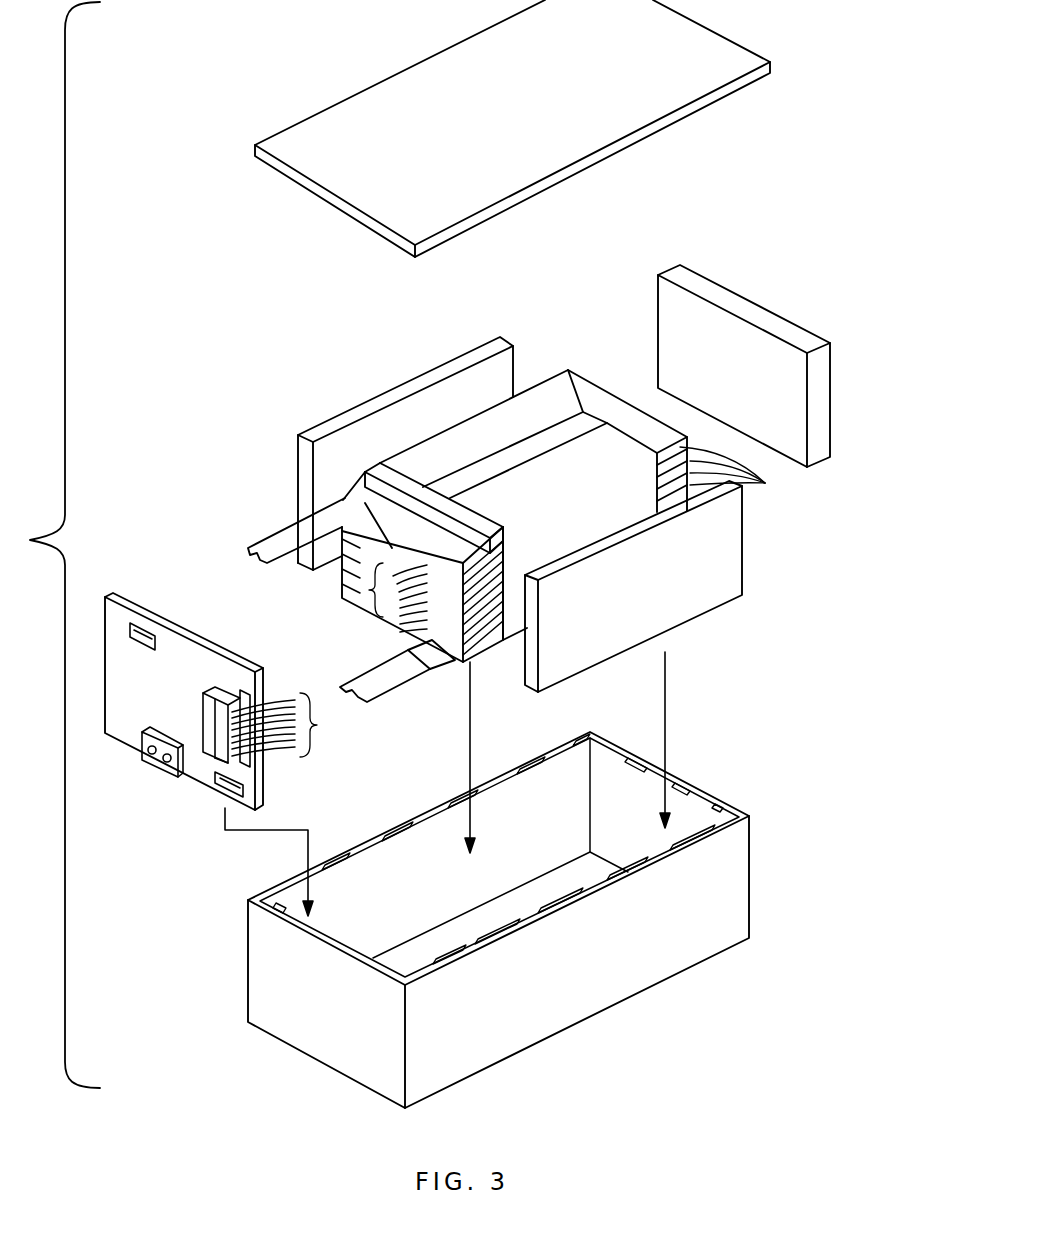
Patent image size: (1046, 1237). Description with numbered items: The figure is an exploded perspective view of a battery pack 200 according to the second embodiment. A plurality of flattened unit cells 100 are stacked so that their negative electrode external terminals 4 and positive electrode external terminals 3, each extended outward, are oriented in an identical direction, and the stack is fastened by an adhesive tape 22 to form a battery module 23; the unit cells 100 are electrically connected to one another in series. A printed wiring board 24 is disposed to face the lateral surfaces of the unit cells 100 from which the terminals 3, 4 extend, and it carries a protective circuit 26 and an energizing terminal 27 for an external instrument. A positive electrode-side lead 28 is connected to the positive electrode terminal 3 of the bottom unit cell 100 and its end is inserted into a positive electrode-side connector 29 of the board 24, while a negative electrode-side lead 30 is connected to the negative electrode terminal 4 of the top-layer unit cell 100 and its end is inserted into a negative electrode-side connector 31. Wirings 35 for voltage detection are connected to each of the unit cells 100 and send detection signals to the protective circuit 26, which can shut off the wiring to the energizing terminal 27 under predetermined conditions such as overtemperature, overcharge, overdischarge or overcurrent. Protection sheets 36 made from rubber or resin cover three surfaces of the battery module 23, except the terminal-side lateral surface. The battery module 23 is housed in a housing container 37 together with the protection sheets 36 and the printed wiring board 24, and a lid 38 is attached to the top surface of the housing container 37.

The battery module 200 is at (168, 293).
The lid 38 is at (706, 48).
The protection sheet 36 is at (369, 409).
The battery module 23 is at (454, 420).
The adhesive tape 22 is at (595, 453).
The negative electrode external terminal 4 is at (430, 556).
The positive electrode external terminal 3 is at (336, 496).
The negative electrode-side lead 30 is at (262, 552).
The positive electrode-side lead 28 is at (390, 686).
The wiring for voltage detection 35 is at (370, 609).
The unit cell 100 is at (765, 483).
The printed wiring board 24 is at (142, 586).
The negative electrode-side connector 31 is at (150, 633).
The protective circuit 26 is at (217, 690).
The energizing terminal for external instrument 27 is at (167, 770).
The positive electrode-side connector 29 is at (245, 789).
The housing container 37 is at (742, 888).